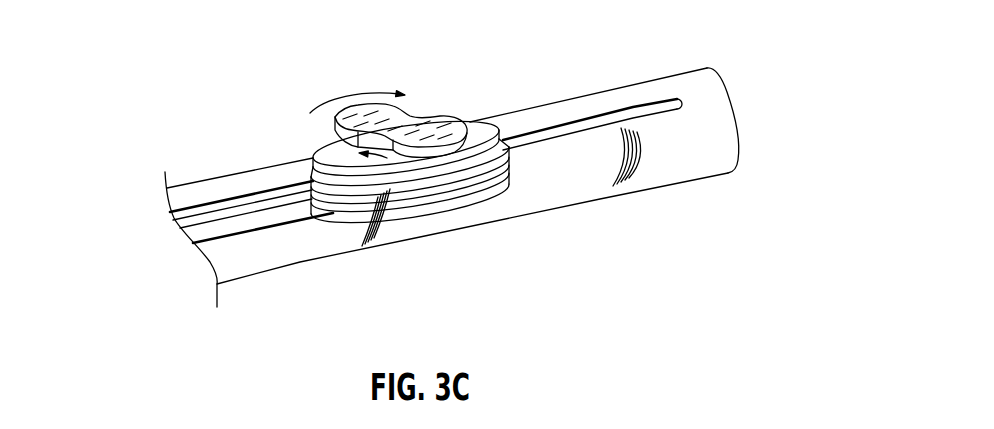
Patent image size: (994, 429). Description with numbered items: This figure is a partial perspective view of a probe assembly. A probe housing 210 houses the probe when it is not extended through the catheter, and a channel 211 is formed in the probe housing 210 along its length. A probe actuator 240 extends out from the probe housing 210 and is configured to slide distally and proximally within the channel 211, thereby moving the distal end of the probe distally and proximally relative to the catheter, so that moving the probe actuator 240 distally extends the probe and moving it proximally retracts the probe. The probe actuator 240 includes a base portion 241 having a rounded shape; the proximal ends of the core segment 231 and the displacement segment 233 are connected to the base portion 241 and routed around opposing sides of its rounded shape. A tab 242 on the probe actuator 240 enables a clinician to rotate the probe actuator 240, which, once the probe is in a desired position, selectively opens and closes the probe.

The probe housing 210 is at (720, 63).
The channel 211 is at (232, 202).
The core segment 231 is at (427, 203).
The displacement segment 233 is at (242, 235).
The probe actuator 240 is at (483, 97).
The base portion 241 is at (492, 195).
The tab 242 is at (433, 115).